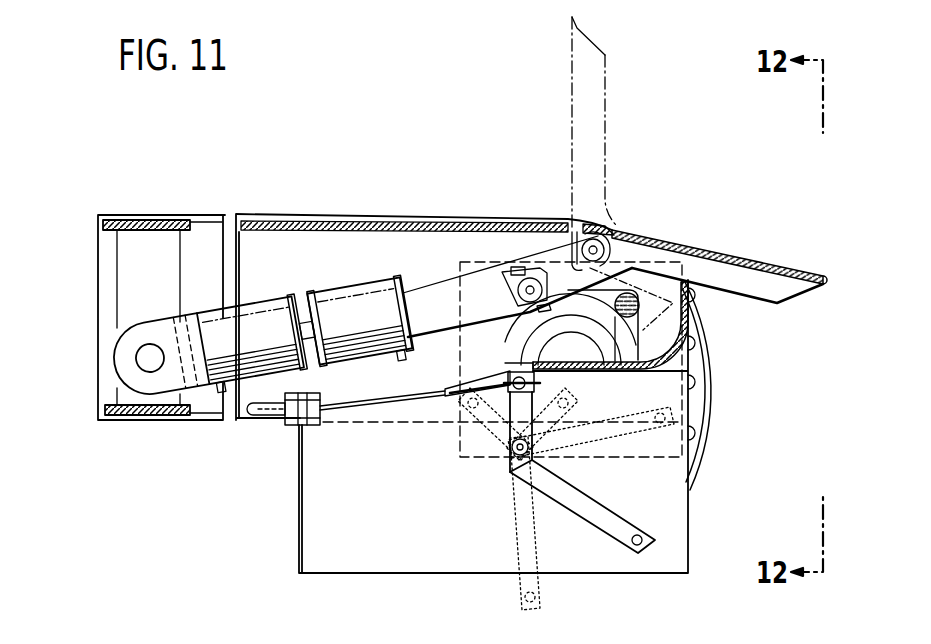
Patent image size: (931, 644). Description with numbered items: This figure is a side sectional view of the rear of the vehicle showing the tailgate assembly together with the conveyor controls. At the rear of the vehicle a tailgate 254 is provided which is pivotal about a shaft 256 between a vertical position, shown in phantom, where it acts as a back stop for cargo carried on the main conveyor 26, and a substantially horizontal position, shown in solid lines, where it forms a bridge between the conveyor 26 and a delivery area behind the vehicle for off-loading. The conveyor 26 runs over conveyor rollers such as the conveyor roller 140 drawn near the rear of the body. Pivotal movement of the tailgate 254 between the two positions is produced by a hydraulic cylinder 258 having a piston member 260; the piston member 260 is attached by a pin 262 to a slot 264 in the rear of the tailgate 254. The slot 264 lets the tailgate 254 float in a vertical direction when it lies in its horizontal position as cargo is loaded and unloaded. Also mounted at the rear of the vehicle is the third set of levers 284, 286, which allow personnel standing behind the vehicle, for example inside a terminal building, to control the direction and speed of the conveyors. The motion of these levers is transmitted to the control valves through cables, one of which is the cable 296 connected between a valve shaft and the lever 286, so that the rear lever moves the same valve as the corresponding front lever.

The left main conveyor 26 is at (458, 219).
The conveyor roller 140 is at (695, 329).
The tailgate 254 is at (732, 257).
The shaft 256 is at (590, 266).
The hydraulic cylinder 258 is at (275, 305).
The piston member 260 is at (432, 292).
The pin 262 is at (531, 283).
The slot 264 is at (513, 270).
The lever 284 is at (593, 517).
The lever 286 is at (566, 499).
The cable 296 is at (268, 410).